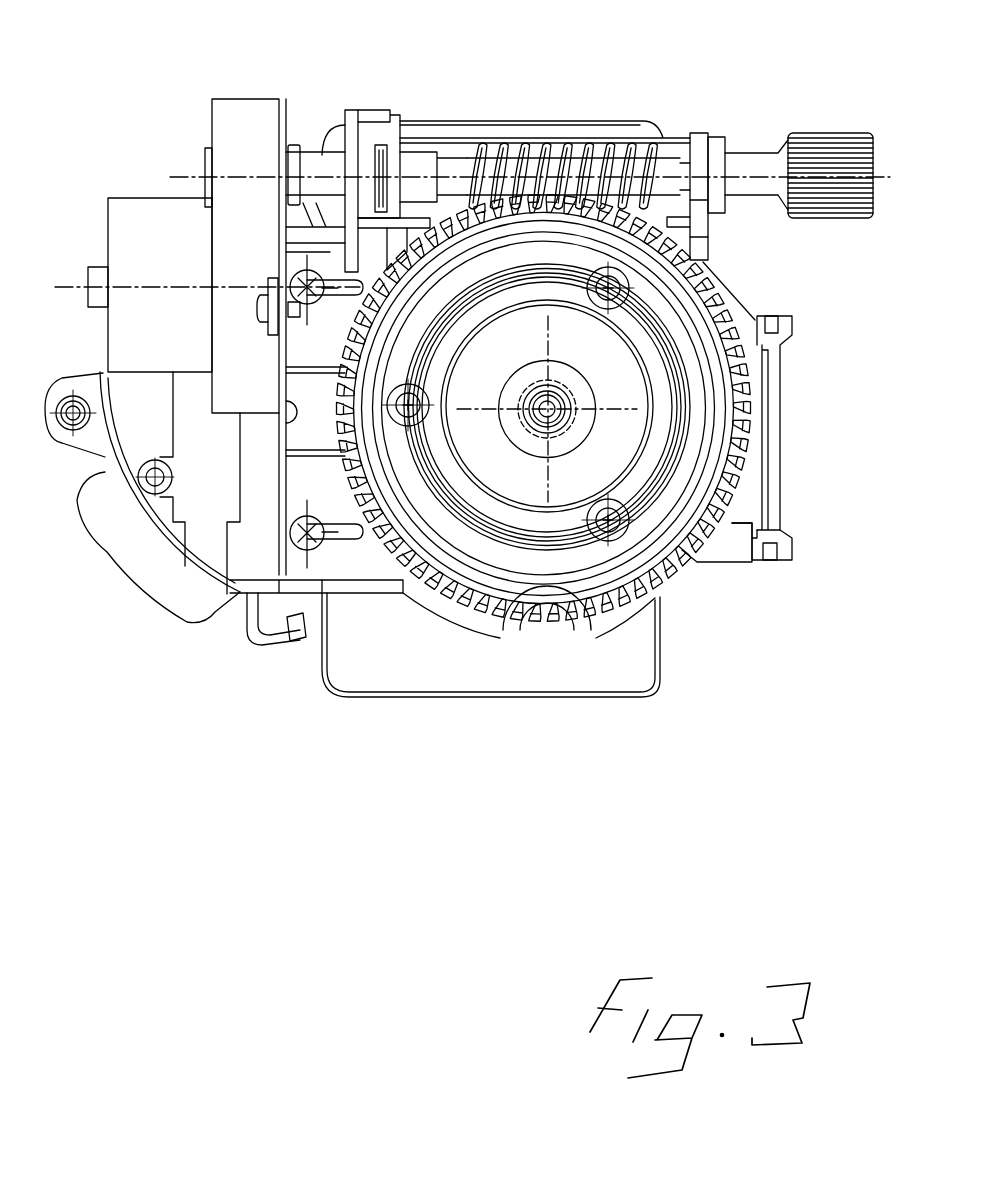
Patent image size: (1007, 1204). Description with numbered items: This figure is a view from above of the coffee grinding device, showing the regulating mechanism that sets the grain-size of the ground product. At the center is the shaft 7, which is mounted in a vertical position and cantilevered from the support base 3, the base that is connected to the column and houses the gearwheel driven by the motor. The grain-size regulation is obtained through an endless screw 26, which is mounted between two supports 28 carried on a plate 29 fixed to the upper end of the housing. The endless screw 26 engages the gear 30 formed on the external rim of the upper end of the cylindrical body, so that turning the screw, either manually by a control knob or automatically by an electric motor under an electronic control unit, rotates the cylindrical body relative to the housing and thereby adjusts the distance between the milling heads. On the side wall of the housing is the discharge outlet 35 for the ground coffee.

The support base 3 is at (248, 553).
The shaft 7 is at (563, 422).
The endless screw 26 is at (688, 135).
The supports 28 is at (397, 112).
The plate 29 is at (265, 125).
The gear 30 is at (705, 263).
The discharge outlet 35 is at (768, 460).